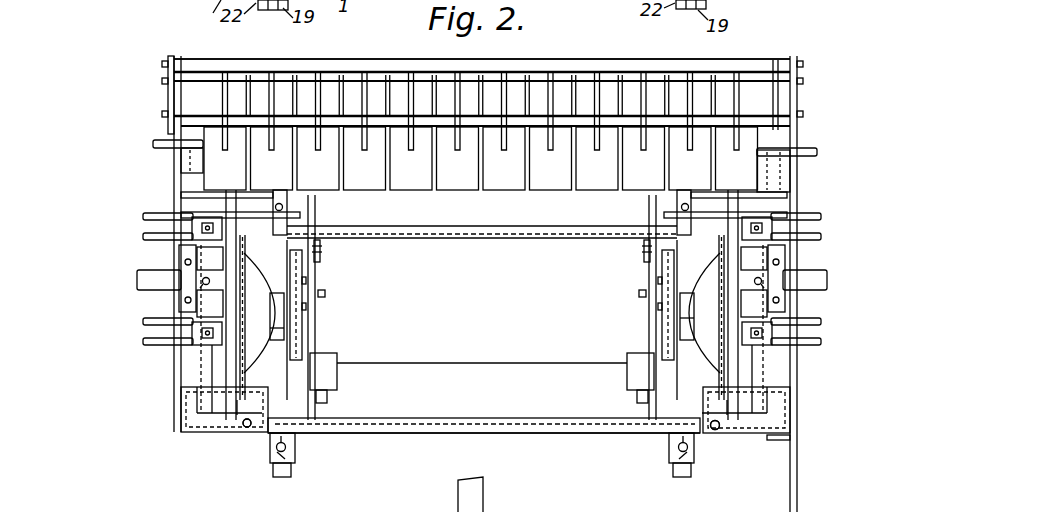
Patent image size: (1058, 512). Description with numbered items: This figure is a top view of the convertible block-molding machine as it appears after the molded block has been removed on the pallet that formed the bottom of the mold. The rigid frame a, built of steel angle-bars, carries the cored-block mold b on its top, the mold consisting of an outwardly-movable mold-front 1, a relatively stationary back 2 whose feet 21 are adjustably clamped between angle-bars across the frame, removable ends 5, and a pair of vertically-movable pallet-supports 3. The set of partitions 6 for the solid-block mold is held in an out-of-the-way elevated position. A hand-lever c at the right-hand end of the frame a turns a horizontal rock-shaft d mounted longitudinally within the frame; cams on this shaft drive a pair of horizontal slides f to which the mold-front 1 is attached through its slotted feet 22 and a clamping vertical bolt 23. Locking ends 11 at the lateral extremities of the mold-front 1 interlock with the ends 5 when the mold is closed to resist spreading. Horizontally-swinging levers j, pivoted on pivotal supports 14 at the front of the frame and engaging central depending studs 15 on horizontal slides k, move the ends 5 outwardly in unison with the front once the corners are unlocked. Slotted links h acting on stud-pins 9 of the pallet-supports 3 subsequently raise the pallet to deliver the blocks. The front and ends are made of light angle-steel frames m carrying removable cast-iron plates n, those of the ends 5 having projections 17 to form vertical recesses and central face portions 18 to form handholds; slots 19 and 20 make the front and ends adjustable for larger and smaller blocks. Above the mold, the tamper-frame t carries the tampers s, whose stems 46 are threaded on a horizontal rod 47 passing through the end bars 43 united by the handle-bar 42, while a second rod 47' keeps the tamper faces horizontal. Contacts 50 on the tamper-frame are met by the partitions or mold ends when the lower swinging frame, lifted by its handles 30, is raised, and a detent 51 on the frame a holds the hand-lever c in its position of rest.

The mold-front 1 is at (506, 421).
The mold-back 2 is at (488, 230).
The pallet-supports 3 is at (297, 262).
The mold ends 5 is at (724, 280).
The partitions 6 is at (402, 8).
The stud-pins 9 is at (323, 293).
The locking ends 11 is at (266, 425).
The pivotal supports 14 is at (209, 45).
The depending studs 15 is at (205, 282).
The projections 17 is at (482, 313).
The face portions 18 is at (280, 328).
The slots 19 is at (290, 470).
The slots 20 is at (147, 229).
The feet 21 is at (280, 215).
The slotted feet 22 is at (678, 449).
The vertical bolt 23 is at (277, 452).
The handles 30 is at (158, 147).
The handle-bar 42 is at (311, 64).
The end bars 43 is at (168, 100).
The stem 46 is at (410, 85).
The horizontal rod 47 is at (482, 58).
The rod 47' is at (489, 127).
The contacts 50 is at (208, 137).
The detent 51 is at (790, 438).
The frame a is at (180, 420).
The cored-block mold b is at (473, 432).
The hand-lever c is at (798, 487).
The rock-shaft d is at (465, 370).
The horizontal slides f is at (300, 403).
The link h is at (320, 245).
The swinging levers j is at (237, 400).
The horizontal slides k is at (138, 280).
The frames m is at (733, 222).
The plates n is at (727, 292).
The tampers s is at (481, 158).
The tamper-frame t is at (558, 62).